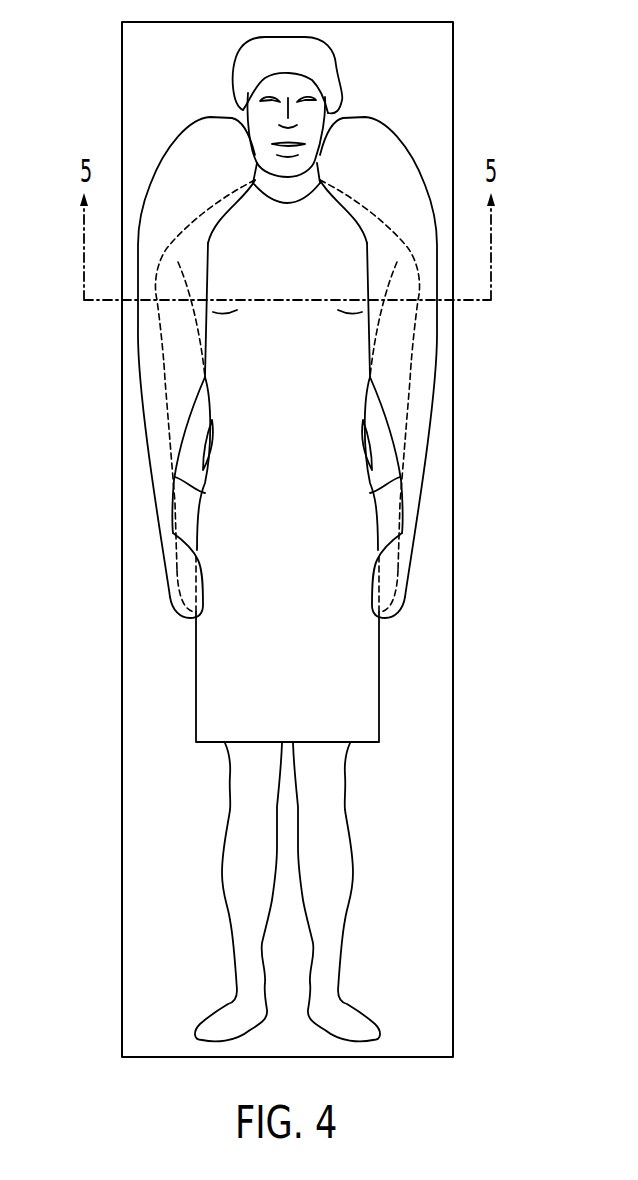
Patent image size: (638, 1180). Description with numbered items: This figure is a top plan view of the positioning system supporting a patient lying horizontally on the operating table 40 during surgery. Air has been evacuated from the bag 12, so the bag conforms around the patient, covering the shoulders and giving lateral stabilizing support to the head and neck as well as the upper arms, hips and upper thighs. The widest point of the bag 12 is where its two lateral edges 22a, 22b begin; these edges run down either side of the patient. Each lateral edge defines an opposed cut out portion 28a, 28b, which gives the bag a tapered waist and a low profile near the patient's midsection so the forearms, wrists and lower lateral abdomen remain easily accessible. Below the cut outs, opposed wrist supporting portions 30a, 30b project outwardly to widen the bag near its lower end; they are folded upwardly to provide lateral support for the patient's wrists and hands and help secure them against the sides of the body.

The bag 12 is at (405, 113).
The lateral edge 22a is at (210, 243).
The lateral edge 22b is at (366, 243).
The cut out portion 28a is at (205, 493).
The cut out portion 28b is at (370, 493).
The wrist supporting portion 30a is at (205, 592).
The wrist supporting portion 30b is at (370, 592).
The operating table 40 is at (453, 540).